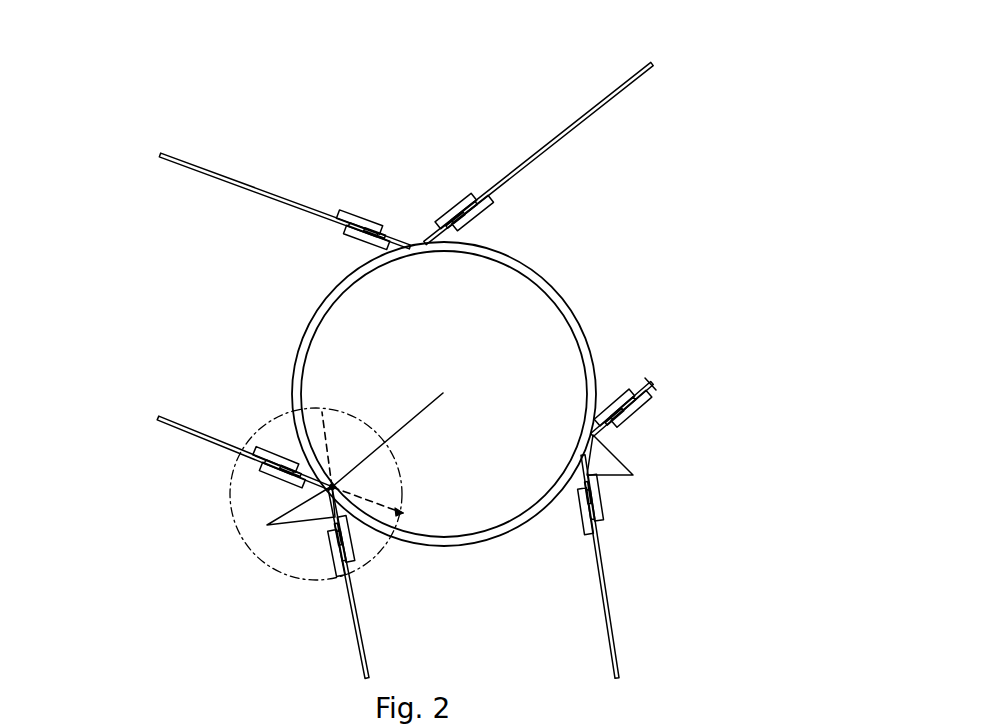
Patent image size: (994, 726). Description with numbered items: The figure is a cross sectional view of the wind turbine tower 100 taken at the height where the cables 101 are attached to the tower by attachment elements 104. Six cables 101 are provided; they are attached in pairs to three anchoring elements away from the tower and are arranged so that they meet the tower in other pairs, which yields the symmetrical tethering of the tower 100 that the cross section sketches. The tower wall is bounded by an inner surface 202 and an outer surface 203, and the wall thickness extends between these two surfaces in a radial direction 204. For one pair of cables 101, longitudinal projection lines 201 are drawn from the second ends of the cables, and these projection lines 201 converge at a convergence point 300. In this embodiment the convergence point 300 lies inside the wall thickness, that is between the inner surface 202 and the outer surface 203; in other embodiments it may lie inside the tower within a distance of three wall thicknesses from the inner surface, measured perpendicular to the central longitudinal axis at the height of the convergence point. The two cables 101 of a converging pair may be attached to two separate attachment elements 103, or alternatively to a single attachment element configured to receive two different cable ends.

The wind turbine tower 100 is at (107, 235).
The cable 101 is at (225, 178).
The attachment element 103 is at (648, 475).
The attachment element 104 is at (313, 322).
The longitudinal projection line 201 is at (413, 508).
The inner surface 202 is at (530, 282).
The outer surface 203 is at (565, 295).
The radial direction 204 is at (412, 418).
The convergence point 300 is at (337, 487).